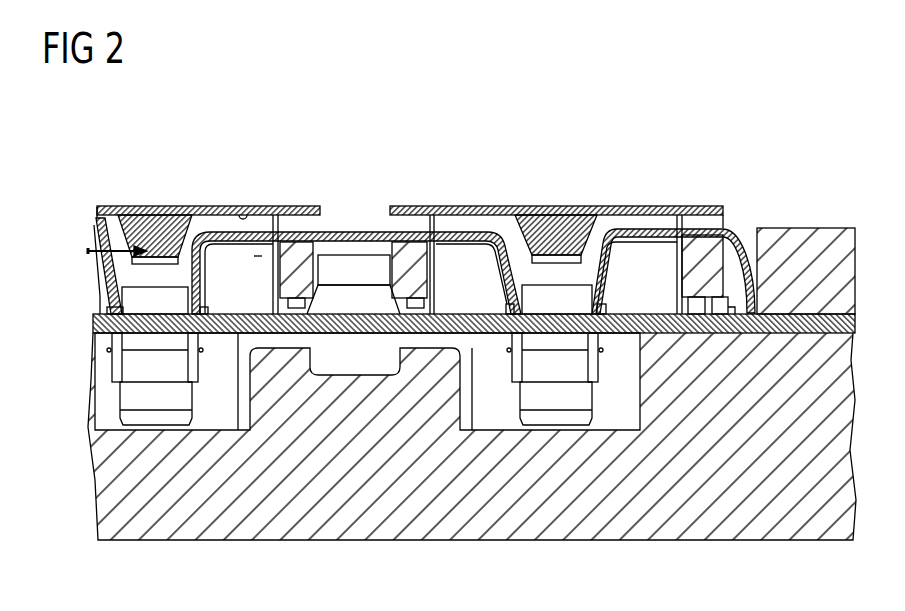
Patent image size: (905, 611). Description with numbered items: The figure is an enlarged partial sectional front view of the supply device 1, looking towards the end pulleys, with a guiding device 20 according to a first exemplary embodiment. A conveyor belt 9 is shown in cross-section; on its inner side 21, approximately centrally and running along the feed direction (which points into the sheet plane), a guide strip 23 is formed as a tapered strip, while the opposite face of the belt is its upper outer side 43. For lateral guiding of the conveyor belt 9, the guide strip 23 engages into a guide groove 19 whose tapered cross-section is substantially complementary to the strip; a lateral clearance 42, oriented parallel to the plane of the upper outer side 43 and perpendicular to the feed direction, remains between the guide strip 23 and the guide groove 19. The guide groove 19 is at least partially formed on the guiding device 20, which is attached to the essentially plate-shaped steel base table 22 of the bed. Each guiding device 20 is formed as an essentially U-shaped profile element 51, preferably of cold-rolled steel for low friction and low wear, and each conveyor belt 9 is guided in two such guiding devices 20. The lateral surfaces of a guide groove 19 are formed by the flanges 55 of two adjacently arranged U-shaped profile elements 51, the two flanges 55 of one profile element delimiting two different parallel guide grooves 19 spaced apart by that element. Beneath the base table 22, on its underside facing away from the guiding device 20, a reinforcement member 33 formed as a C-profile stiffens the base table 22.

The supply device 1 is at (807, 163).
The conveyor belt 9 is at (289, 206).
The guide groove 19 is at (109, 232).
The guiding device 20 is at (341, 213).
The inner side 21 is at (243, 206).
The base table 22 is at (643, 310).
The guide strip 23 is at (203, 282).
The reinforcement member 33 is at (467, 377).
The lateral clearance 42 is at (98, 257).
The upper outer side 43 is at (166, 195).
The U-shaped profile element 51 is at (362, 232).
The flanges 55 is at (212, 257).